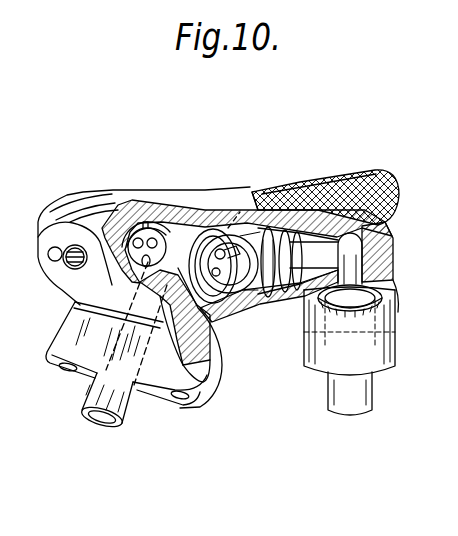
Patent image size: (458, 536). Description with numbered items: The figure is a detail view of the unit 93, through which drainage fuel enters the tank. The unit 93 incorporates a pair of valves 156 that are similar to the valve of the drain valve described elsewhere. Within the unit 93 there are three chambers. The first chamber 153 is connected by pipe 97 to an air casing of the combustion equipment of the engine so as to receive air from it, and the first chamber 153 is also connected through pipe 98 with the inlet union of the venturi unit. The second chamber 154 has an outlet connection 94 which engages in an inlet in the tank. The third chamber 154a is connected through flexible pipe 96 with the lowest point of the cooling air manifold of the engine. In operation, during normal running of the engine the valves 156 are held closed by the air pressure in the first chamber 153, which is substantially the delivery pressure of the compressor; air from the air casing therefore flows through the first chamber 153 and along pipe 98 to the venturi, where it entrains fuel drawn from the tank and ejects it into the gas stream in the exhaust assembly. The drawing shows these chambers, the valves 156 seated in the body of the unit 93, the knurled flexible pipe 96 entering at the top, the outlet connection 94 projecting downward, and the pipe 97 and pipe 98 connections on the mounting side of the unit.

The unit 93 is at (176, 188).
The outlet connection 94 is at (338, 412).
The flexible pipe 96 is at (319, 177).
The pipe 97 is at (110, 200).
The pipe 98 is at (118, 422).
The first chamber 153 is at (183, 266).
The second chamber 154 is at (327, 243).
The third chamber 154a is at (240, 205).
The valves 156 is at (140, 228).